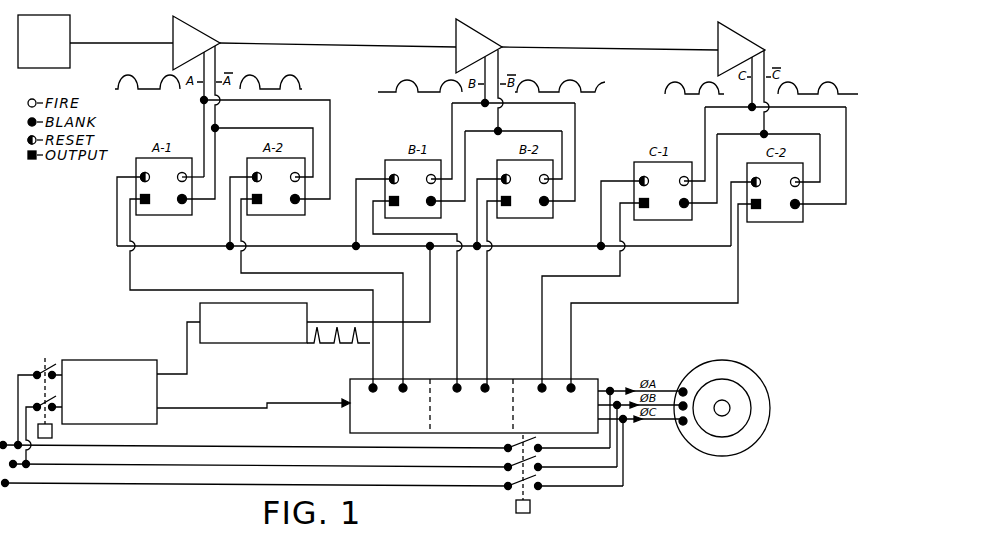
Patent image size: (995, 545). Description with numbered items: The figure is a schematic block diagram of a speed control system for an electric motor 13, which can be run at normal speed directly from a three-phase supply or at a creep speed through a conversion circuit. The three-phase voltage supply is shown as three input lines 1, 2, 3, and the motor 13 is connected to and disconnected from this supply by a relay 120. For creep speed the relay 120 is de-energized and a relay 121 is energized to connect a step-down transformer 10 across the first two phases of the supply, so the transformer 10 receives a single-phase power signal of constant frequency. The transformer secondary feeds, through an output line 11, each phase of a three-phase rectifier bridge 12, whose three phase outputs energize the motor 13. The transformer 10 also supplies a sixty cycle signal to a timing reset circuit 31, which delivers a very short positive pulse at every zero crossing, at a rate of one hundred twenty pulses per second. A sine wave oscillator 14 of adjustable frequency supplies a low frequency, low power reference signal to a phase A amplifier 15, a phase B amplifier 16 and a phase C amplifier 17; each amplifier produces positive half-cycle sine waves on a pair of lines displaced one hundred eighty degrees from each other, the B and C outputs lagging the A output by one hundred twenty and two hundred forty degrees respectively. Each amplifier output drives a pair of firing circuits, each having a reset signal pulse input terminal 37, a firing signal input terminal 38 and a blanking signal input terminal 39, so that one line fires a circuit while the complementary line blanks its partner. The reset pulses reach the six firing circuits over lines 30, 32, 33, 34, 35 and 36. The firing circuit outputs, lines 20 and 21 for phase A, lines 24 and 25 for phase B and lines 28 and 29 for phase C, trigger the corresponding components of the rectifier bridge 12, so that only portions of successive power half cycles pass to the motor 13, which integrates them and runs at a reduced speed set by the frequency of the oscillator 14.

The three-phase supply line L1 1 is at (7, 443).
The three-phase supply line L2 2 is at (13, 463).
The three-phase supply line L3 3 is at (11, 474).
The step-down transformer 10 is at (97, 360).
The output line 11 is at (219, 408).
The three-phase rectifier bridge 12 is at (494, 380).
The electric motor 13 is at (770, 404).
The sine wave oscillator 14 is at (49, 14).
The phase A amplifier 15 is at (191, 28).
The phase B amplifier 16 is at (483, 36).
The phase C amplifier 17 is at (742, 38).
The output line of first firing circuit 20 is at (166, 290).
The output line of second firing circuit 21 is at (283, 276).
The output line of third firing circuit 24 is at (440, 234).
The output line of fourth firing circuit 25 is at (487, 275).
The output line of fifth firing circuit 28 is at (620, 270).
The output line of sixth firing circuit 29 is at (738, 266).
The reset signal line 30 is at (117, 213).
The timing reset circuit 31 is at (261, 343).
The reset signal line 32 is at (230, 229).
The reset signal line 33 is at (356, 229).
The reset signal line 34 is at (490, 180).
The reset signal line 35 is at (601, 223).
The reset signal line 36 is at (731, 225).
The reset signal pulse input terminal 37 is at (208, 171).
The firing signal input terminal 38 is at (229, 180).
The blanking signal input terminal 39 is at (220, 201).
The relay 120 is at (530, 506).
The relay 121 is at (52, 431).